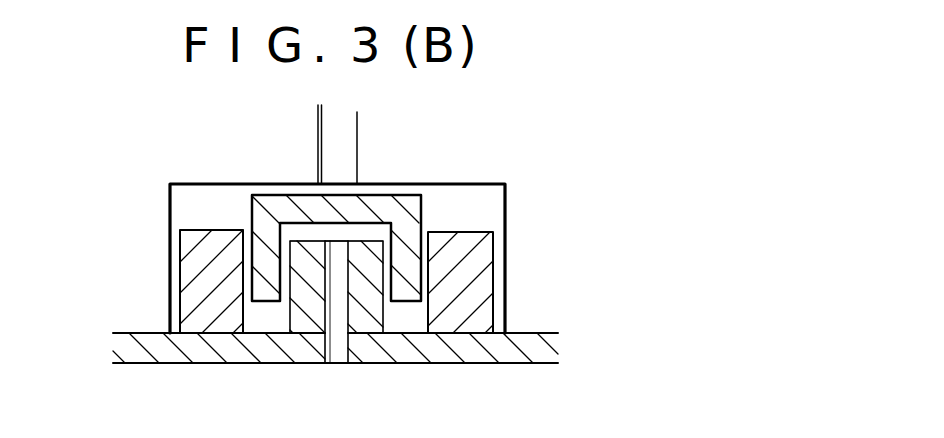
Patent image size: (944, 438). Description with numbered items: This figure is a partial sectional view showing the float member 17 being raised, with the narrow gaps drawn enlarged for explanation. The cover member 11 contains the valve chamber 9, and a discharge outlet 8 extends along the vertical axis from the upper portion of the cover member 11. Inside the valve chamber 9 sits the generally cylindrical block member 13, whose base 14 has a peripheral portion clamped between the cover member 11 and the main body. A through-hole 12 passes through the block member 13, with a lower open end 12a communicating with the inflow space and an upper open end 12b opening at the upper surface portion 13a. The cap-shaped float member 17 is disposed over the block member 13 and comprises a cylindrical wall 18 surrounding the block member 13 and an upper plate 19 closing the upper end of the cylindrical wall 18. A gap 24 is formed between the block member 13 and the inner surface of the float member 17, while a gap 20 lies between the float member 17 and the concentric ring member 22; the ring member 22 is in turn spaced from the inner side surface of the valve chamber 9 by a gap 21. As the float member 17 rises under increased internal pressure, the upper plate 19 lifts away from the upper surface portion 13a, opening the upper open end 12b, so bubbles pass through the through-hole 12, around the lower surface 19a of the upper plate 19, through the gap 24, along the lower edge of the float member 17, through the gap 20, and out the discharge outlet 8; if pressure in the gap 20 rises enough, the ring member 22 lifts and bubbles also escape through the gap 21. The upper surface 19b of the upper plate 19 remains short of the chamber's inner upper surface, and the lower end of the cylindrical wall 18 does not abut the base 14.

The discharge outlet 8 is at (355, 155).
The valve chamber 9 is at (497, 207).
The cover member 11 is at (538, 317).
The through-hole 12 is at (328, 355).
The lower open end 12a is at (342, 363).
The upper open end 12b is at (312, 225).
The block member 13 is at (307, 310).
The upper surface portion 13a is at (370, 228).
The base 14 is at (462, 350).
The float member 17 is at (405, 222).
The cylindrical wall 18 is at (240, 282).
The upper plate 19 is at (285, 232).
The lower surface 19a is at (243, 232).
The upper surface 19b is at (360, 233).
The gap 20 is at (200, 295).
The gap 21 is at (170, 258).
The ring member 22 is at (169, 182).
The gap 24 is at (375, 222).